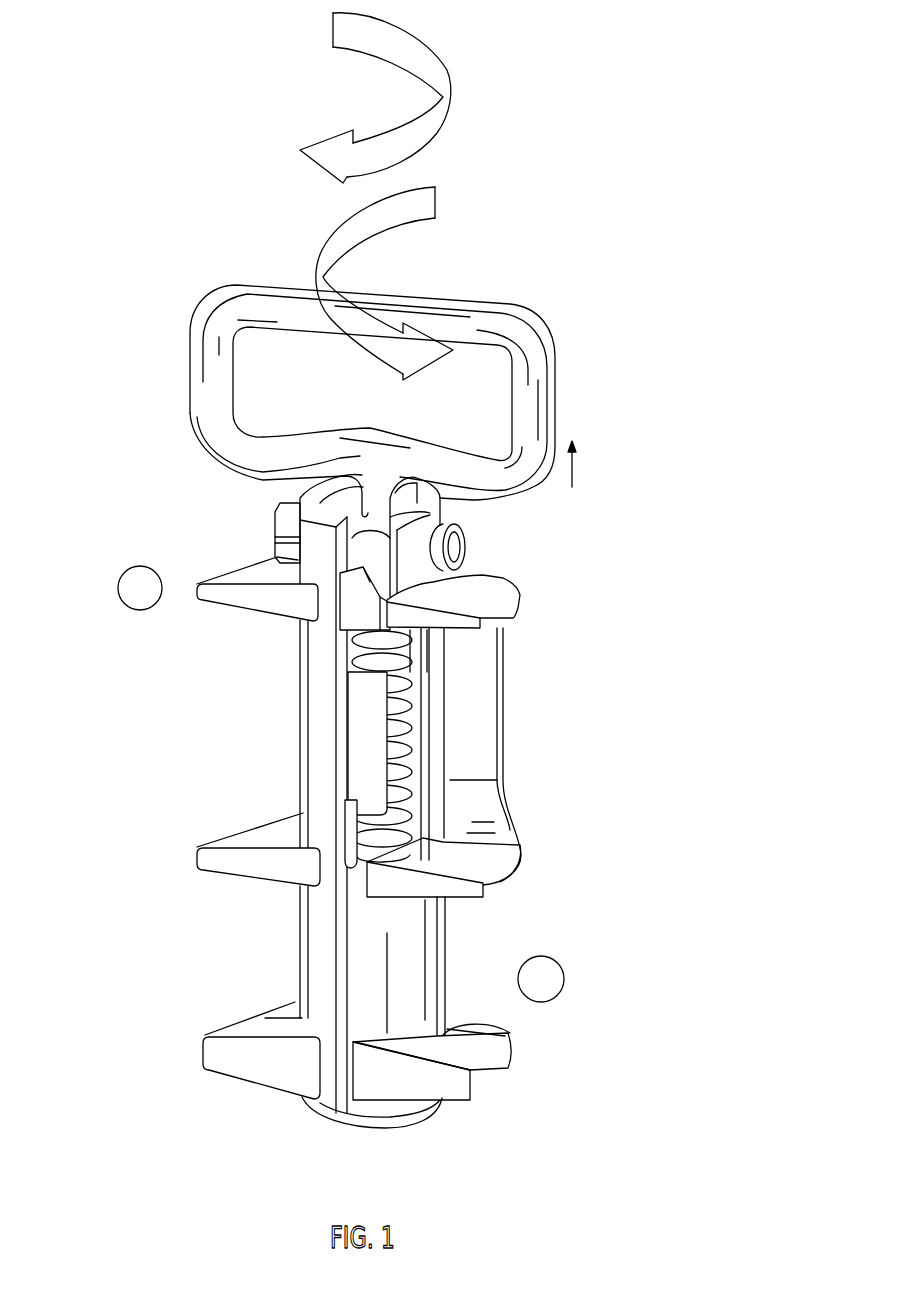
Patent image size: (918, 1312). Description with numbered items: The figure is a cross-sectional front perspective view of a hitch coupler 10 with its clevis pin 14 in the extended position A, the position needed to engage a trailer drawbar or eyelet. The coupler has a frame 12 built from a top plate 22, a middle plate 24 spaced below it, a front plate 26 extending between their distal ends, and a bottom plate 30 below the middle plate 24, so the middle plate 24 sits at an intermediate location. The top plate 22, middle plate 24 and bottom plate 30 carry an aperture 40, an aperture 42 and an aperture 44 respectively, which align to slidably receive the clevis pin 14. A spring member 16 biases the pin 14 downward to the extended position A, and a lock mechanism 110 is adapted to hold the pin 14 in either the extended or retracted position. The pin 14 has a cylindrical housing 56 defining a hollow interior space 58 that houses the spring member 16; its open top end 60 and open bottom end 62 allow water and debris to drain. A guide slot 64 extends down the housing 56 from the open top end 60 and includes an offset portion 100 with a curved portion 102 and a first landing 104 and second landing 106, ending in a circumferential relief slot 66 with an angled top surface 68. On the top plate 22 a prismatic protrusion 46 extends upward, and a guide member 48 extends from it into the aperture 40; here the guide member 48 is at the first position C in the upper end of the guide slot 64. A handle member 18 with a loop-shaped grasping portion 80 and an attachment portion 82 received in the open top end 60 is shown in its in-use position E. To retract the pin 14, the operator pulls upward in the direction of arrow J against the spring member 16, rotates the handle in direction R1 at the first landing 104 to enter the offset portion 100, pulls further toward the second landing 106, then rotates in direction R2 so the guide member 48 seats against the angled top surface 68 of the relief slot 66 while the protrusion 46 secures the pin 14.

The hitch coupler 10 is at (367, 602).
The frame 12 is at (490, 575).
The clevis pin 14 is at (298, 732).
The spring member 16 is at (470, 746).
The handle member 18 is at (362, 375).
The top plate 22 is at (245, 573).
The middle plate 24 is at (237, 843).
The front plate 26 is at (507, 755).
The bottom plate 30 is at (237, 1032).
The aperture 40 is at (481, 594).
The aperture 42 is at (453, 867).
The aperture 44 is at (467, 1072).
The prismatic protrusion 46 is at (353, 578).
The guide member 48 is at (345, 613).
The cylindrical housing 56 is at (413, 953).
The hollow interior space 58 is at (269, 856).
The open top end 60 is at (325, 503).
The open bottom end 62 is at (367, 1128).
The guide slot 64 is at (508, 610).
The relief slot 66 is at (347, 853).
The angled top surface 68 is at (373, 810).
The loop-shaped grasping portion 80 is at (452, 460).
The attachment portion 82 is at (365, 548).
The offset portion 100 is at (417, 716).
The curved portion 102 is at (427, 660).
The first landing 104 is at (282, 736).
The second landing 106 is at (450, 845).
The lock mechanism 110 is at (322, 668).
The rotation direction arrow R1 is at (448, 96).
The rotation direction arrow R2 is at (313, 237).
The in-use position E is at (207, 382).
The upward force arrow J is at (572, 468).
The first position C is at (347, 602).
The extended position A is at (443, 1000).